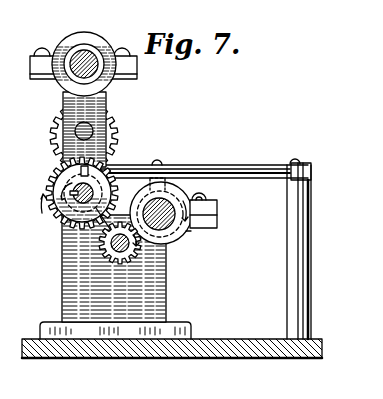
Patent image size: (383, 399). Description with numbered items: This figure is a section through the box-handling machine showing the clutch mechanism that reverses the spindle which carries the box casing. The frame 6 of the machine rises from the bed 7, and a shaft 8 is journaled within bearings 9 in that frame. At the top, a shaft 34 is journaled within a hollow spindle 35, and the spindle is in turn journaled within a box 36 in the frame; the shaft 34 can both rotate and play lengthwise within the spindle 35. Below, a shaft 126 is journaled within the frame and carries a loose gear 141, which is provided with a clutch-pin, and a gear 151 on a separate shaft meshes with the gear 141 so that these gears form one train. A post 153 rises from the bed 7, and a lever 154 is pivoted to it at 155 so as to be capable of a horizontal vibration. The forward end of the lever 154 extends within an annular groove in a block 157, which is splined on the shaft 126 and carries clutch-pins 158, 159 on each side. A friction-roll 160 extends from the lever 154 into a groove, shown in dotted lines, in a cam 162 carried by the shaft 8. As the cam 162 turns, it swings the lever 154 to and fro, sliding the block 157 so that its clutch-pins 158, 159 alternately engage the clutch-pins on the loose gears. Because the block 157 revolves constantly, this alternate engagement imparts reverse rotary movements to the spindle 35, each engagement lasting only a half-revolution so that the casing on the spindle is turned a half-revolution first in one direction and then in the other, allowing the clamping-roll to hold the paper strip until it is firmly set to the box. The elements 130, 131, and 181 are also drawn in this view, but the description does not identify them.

The frame 6 is at (68, 270).
The bed 7 is at (186, 358).
The shaft 8 is at (187, 232).
The bearings 9 is at (203, 211).
The shaft 34 is at (101, 76).
The hollow spindle 35 is at (63, 76).
The box 36 is at (90, 45).
The shaft 126 is at (80, 208).
The gear 130 is at (118, 141).
The shaft 131 is at (117, 124).
The loose gear 141 is at (54, 173).
The gear 151 is at (140, 257).
The post 153 is at (300, 278).
The lever 154 is at (238, 172).
The pivot 155 is at (303, 163).
The block 157 is at (80, 207).
The clutch-pin 158 is at (58, 213).
The clutch-pin 159 is at (88, 178).
The friction-roll 160 is at (167, 182).
The cam 162 is at (172, 239).
The cap 181 is at (200, 196).